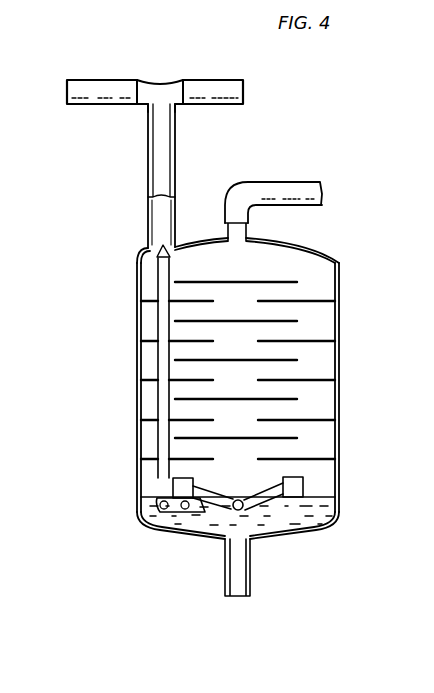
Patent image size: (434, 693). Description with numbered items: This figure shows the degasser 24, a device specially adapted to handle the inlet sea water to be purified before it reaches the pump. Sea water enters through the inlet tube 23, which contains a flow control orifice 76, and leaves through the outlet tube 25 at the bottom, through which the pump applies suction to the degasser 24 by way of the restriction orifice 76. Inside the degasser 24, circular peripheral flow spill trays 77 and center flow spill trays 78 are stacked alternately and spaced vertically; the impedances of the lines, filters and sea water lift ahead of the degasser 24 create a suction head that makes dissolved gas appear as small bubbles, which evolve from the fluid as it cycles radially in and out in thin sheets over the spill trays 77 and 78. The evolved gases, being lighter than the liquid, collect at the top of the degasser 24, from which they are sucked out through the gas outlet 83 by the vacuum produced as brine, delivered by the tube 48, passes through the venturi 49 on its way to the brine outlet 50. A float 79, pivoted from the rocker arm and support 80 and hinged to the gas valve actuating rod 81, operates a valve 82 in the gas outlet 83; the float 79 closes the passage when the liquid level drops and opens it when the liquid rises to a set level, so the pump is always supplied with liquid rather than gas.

The inlet tube 23 is at (302, 182).
The degasser 24 is at (340, 345).
The outlet tube 25 is at (250, 590).
The tube 48 is at (100, 78).
The venturi 49 is at (165, 84).
The brine outlet 50 is at (220, 78).
The flow control orifice 76 is at (244, 233).
The peripheral flow spill trays 77 is at (284, 282).
The center flow spill trays 78 is at (318, 420).
The float 79 is at (303, 486).
The rocker arm and support 80 is at (223, 500).
The gas valve actuating rod 81 is at (165, 475).
The valve 82 is at (153, 250).
The gas outlet 83 is at (176, 152).